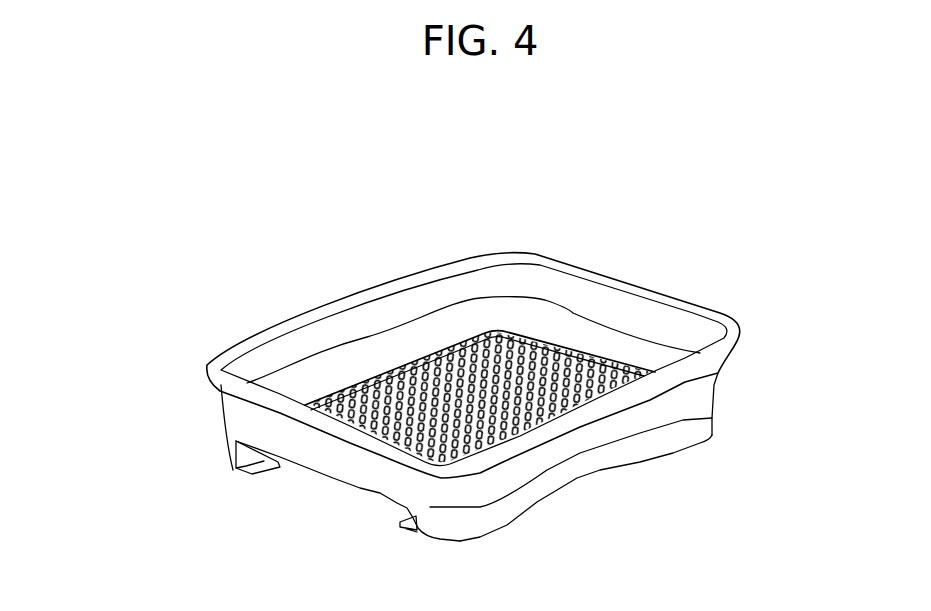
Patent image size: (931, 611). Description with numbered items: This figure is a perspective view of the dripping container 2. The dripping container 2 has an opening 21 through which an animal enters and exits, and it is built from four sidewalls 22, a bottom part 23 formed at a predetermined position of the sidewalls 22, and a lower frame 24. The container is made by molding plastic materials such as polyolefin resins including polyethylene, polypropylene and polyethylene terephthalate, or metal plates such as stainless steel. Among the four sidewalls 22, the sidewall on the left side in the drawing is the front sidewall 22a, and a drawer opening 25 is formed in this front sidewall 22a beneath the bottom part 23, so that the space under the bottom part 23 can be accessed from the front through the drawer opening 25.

The dripping container 2 is at (410, 193).
The opening 21 is at (387, 328).
The sidewalls 22 is at (697, 400).
The front sidewall 22a is at (238, 422).
The bottom part 23 is at (493, 338).
The lower frame 24 is at (235, 473).
The drawer opening 25 is at (337, 490).